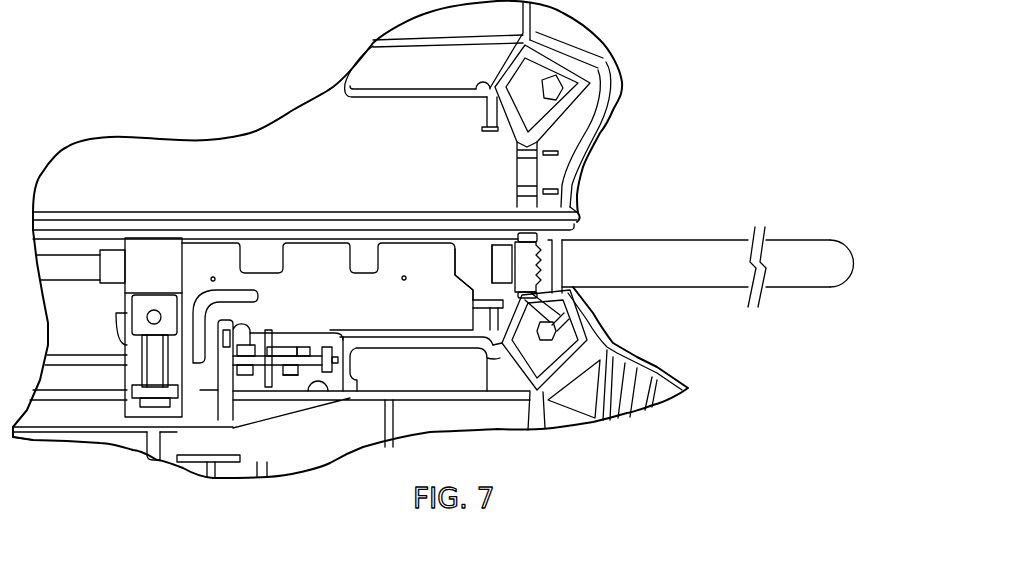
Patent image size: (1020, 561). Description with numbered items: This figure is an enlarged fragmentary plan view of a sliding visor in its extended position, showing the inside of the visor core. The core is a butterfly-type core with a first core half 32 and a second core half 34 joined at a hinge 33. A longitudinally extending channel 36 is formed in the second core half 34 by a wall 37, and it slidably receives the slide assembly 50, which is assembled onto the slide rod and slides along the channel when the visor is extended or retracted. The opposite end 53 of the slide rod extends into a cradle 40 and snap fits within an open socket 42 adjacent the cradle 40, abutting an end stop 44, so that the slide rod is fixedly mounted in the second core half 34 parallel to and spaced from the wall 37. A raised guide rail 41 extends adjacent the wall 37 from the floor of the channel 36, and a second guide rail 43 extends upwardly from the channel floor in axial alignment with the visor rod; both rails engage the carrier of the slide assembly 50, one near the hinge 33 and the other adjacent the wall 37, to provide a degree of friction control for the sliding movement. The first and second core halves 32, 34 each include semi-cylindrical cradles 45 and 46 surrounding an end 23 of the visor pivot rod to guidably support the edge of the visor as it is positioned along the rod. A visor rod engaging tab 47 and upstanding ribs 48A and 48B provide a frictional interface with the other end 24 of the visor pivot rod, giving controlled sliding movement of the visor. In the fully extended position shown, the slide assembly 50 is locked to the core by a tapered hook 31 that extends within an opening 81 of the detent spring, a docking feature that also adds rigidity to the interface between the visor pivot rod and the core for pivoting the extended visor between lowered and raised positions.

The end of visor pivot rod 23 is at (675, 248).
The end of visor pivot rod 24 is at (835, 250).
The tapered hook 31 is at (483, 292).
The first core half 32 is at (583, 57).
The hinge 33 is at (578, 218).
The second core half 34 is at (512, 412).
The channel 36 is at (262, 186).
The wall 37 is at (97, 430).
The cradle 40 is at (247, 347).
The raised guide rail 41 is at (60, 412).
The open socket 42 is at (292, 375).
The second guide rail 43 is at (67, 270).
The end stop 44 is at (325, 347).
The semi-cylindrical cradle 45 is at (517, 177).
The semi-cylindrical cradle 46 is at (560, 313).
The visor rod engaging tab 47 is at (552, 263).
The upstanding rib 48A is at (552, 147).
The upstanding rib 48B is at (552, 188).
The slide assembly 50 is at (318, 243).
The opposite end of slide rod 53 is at (253, 358).
The opening of detent spring 81 is at (472, 310).